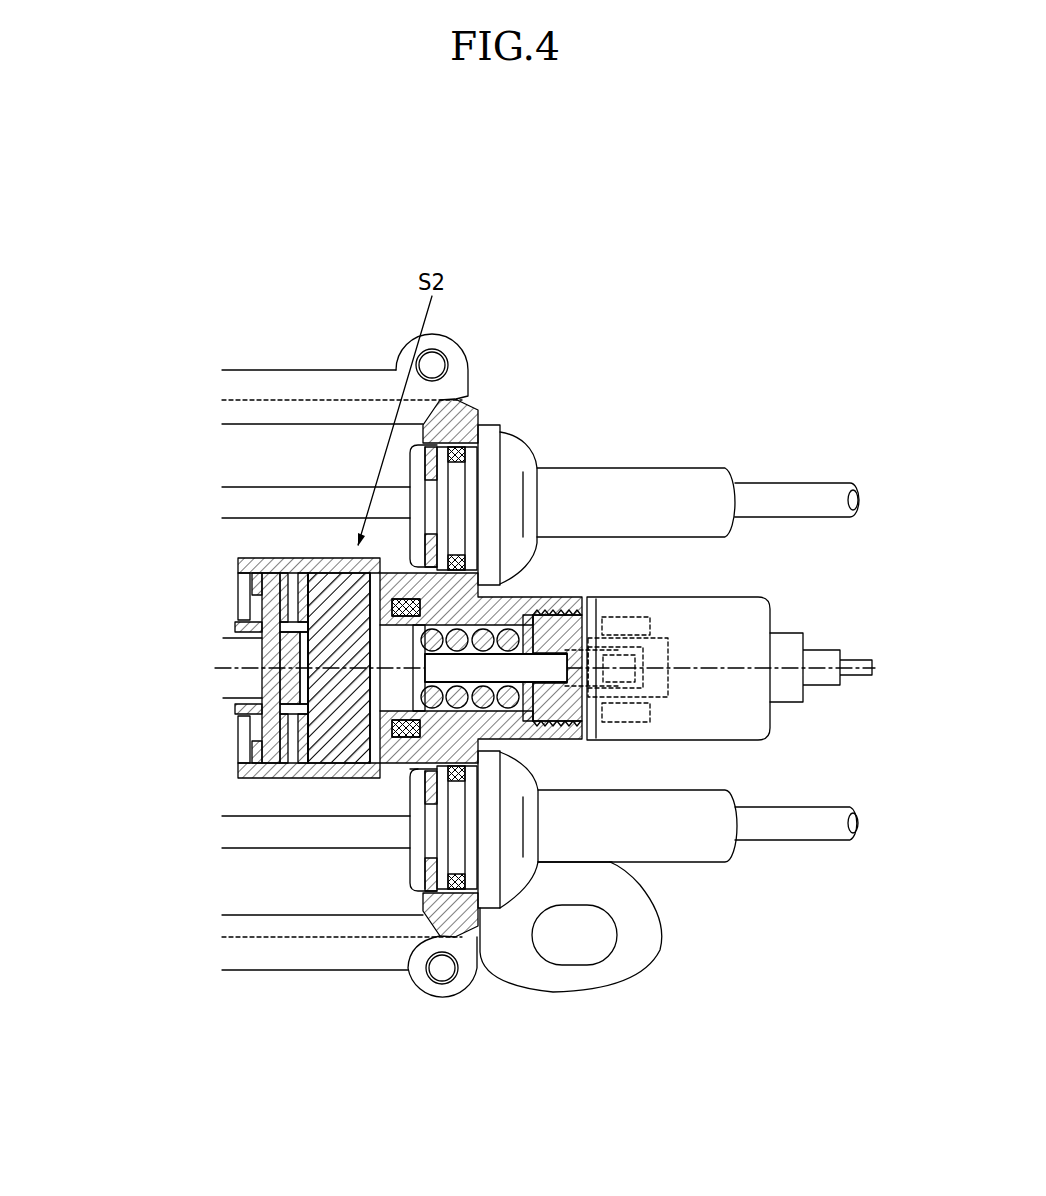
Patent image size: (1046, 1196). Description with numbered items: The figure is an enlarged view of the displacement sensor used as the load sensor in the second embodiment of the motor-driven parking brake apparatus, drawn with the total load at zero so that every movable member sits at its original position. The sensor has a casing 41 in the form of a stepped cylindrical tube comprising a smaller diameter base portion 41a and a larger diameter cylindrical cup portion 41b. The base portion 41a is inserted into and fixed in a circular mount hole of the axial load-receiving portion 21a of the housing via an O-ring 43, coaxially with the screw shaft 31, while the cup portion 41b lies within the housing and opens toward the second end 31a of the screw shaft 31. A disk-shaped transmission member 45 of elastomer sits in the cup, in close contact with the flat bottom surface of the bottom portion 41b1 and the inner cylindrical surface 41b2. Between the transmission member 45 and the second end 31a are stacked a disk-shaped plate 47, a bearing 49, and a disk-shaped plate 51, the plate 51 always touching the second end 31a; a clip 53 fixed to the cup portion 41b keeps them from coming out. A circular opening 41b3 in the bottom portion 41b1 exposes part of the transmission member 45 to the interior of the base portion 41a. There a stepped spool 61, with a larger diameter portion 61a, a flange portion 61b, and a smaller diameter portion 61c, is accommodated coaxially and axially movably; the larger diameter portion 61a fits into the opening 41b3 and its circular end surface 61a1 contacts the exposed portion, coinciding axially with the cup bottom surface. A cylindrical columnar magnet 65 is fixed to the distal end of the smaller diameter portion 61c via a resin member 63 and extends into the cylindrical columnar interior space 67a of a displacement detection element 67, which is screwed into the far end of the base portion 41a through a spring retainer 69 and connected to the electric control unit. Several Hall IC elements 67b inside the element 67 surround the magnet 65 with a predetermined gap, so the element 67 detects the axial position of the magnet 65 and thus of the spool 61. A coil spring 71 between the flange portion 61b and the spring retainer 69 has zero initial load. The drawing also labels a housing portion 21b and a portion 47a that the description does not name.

The axial load-receiving portion 21a is at (480, 593).
The mounting flange 21b is at (474, 410).
The screw shaft 31 is at (236, 730).
The second end of the screw shaft 31a is at (238, 778).
The casing 41 is at (253, 779).
The base portion 41a is at (437, 750).
The cylindrical cup portion 41b is at (298, 778).
The bottom portion 41b1 is at (357, 778).
The inner cylindrical surface 41b2 is at (328, 778).
The circular opening 41b3 is at (285, 778).
The O-ring 43 is at (407, 600).
The transmission member 45 is at (346, 575).
The plate 47 is at (310, 575).
The roller slot 47a is at (334, 575).
The bearing 49 is at (290, 575).
The plate 51 is at (258, 572).
The clip 53 is at (238, 558).
The spool 61 is at (720, 862).
The larger diameter portion 61a is at (407, 765).
The circular end surface 61a1 is at (334, 778).
The flange portion 61b is at (615, 858).
The smaller diameter portion 61c is at (745, 840).
The resin member 63 is at (578, 622).
The magnet 65 is at (622, 620).
The displacement detection element 67 is at (735, 597).
The cylindrical columnar interior space 67a is at (662, 652).
The Hall IC elements 67b is at (645, 620).
The spring retainer 69 is at (537, 622).
The coil spring 71 is at (588, 598).